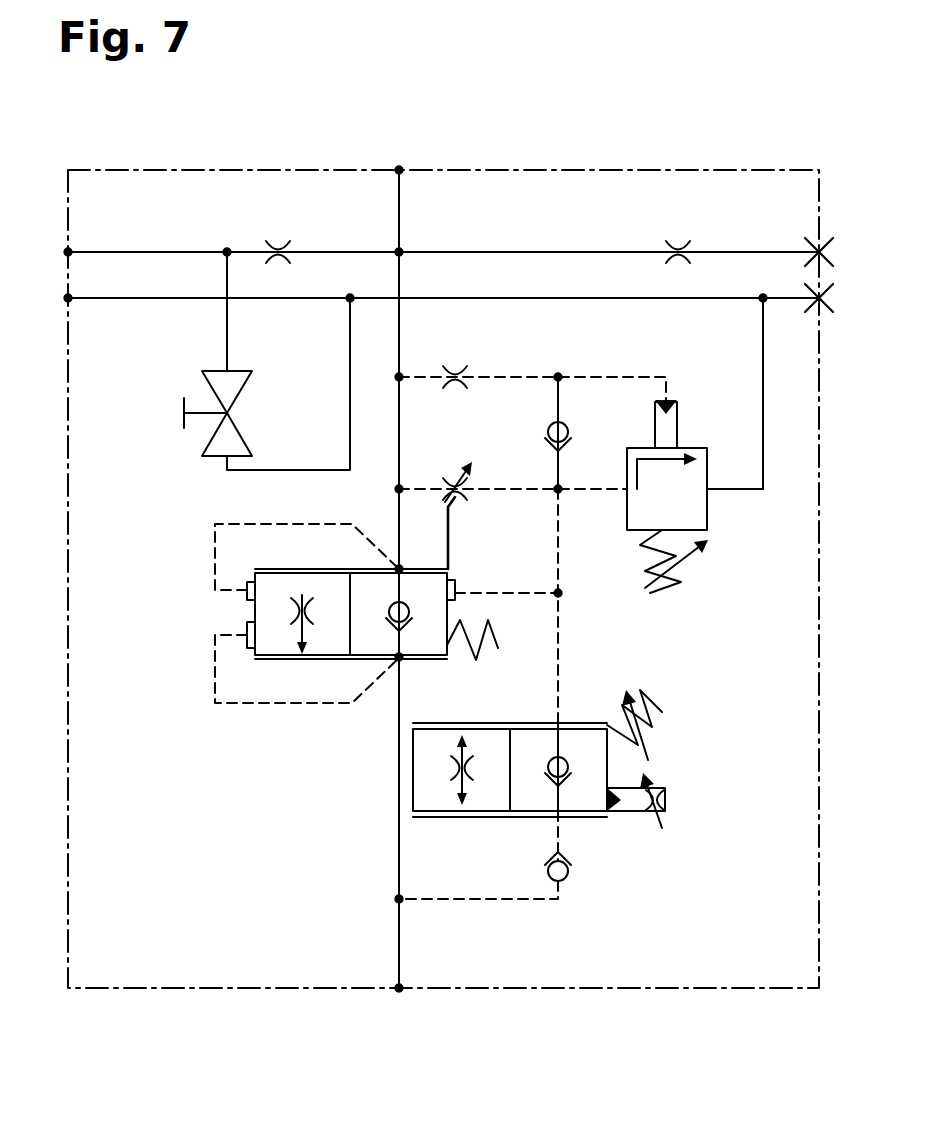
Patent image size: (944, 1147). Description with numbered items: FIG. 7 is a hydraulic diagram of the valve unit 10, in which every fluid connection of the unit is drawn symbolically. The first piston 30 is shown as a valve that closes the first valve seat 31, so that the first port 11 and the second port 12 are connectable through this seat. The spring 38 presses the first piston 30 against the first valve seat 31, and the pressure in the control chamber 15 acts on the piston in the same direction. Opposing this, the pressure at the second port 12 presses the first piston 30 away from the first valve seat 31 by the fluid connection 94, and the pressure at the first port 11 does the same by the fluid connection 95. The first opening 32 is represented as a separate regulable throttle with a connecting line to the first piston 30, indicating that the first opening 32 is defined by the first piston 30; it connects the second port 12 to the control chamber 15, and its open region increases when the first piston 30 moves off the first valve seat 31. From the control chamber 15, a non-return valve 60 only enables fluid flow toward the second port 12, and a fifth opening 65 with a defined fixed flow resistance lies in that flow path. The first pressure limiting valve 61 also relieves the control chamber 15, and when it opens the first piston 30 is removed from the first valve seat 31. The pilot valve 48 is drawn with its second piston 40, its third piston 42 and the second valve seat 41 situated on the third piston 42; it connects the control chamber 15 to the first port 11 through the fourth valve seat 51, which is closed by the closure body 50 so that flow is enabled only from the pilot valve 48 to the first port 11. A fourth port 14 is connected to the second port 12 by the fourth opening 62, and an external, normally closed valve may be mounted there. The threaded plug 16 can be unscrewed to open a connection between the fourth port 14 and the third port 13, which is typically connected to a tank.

The valve unit 10 is at (726, 122).
The first port 11 is at (399, 990).
The second port 12 is at (399, 170).
The third port 13 is at (68, 298).
The fourth port 14 is at (68, 252).
The control chamber 15 is at (558, 593).
The threaded plug 16 is at (217, 424).
The first piston 30 is at (327, 645).
The first valve seat 31 is at (389, 628).
The first opening 32 is at (453, 483).
The spring 38 is at (483, 645).
The second piston 40 is at (566, 783).
The second valve seat 41 is at (566, 777).
The third piston 42 is at (566, 783).
The pilot valve 48 is at (576, 806).
The closure body 50 is at (612, 897).
The fourth valve seat 51 is at (566, 880).
The non-return valve 60 is at (566, 424).
The first pressure limiting valve 61 is at (697, 507).
The fourth opening 62 is at (278, 250).
The fifth opening 65 is at (456, 376).
The fluid connection 94 is at (215, 546).
The fluid connection 95 is at (215, 664).